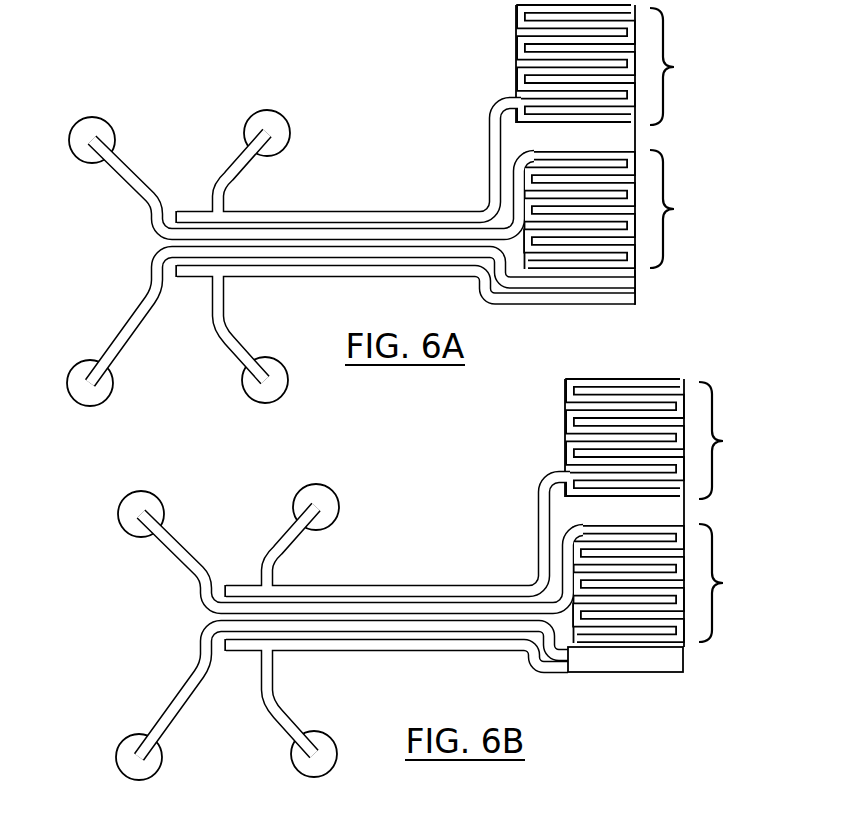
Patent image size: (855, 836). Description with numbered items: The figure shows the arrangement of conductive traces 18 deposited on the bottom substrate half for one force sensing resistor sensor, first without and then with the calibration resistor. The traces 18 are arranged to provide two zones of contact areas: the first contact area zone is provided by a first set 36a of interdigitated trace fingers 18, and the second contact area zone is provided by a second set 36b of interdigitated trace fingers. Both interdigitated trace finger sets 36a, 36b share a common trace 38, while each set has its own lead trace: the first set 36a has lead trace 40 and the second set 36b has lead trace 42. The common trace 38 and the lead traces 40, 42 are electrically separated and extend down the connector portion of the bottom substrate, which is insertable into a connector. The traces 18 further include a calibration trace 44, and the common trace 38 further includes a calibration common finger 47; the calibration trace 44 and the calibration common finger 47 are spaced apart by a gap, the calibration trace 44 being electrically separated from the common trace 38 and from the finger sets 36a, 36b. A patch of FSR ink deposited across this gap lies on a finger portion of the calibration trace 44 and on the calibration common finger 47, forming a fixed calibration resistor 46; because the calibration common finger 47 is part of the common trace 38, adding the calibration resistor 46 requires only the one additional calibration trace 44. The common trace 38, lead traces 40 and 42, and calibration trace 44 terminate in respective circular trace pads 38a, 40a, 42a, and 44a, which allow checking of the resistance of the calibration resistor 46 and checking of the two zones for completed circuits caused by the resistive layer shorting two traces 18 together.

In FIG. 6A, the traces 18 is at (411, 146).
In FIG. 6B, the traces 18 is at (461, 485).
In FIG. 6A, the first set of interdigitated trace fingers 36a is at (617, 70).
In FIG. 6B, the first set of interdigitated trace fingers 36a is at (666, 444).
In FIG. 6A, the second set of interdigitated trace fingers 36b is at (621, 220).
In FIG. 6B, the second set of interdigitated trace fingers 36b is at (670, 578).
In FIG. 6A, the common trace 38 is at (290, 279).
In FIG. 6B, the common trace 38 is at (396, 696).
In FIG. 6A, the circular trace pad 38a is at (256, 402).
In FIG. 6B, the circular trace pad 38a is at (287, 764).
In FIG. 6A, the lead trace 40 is at (440, 223).
In FIG. 6B, the lead trace 40 is at (397, 580).
In FIG. 6A, the circular trace pad 40a is at (288, 121).
In FIG. 6B, the circular trace pad 40a is at (342, 497).
In FIG. 6A, the lead trace 42 is at (385, 240).
In FIG. 6B, the lead trace 42 is at (362, 598).
In FIG. 6A, the circular trace pad 42a is at (96, 117).
In FIG. 6B, the circular trace pad 42a is at (148, 494).
In FIG. 6A, the calibration trace 44 is at (330, 258).
In FIG. 6B, the calibration trace 44 is at (374, 691).
In FIG. 6A, the circular trace pad 44a is at (75, 365).
In FIG. 6B, the circular trace pad 44a is at (117, 733).
In FIG. 6B, the calibration resistor 46 is at (647, 673).
In FIG. 6A, the calibration common finger 47 is at (613, 275).